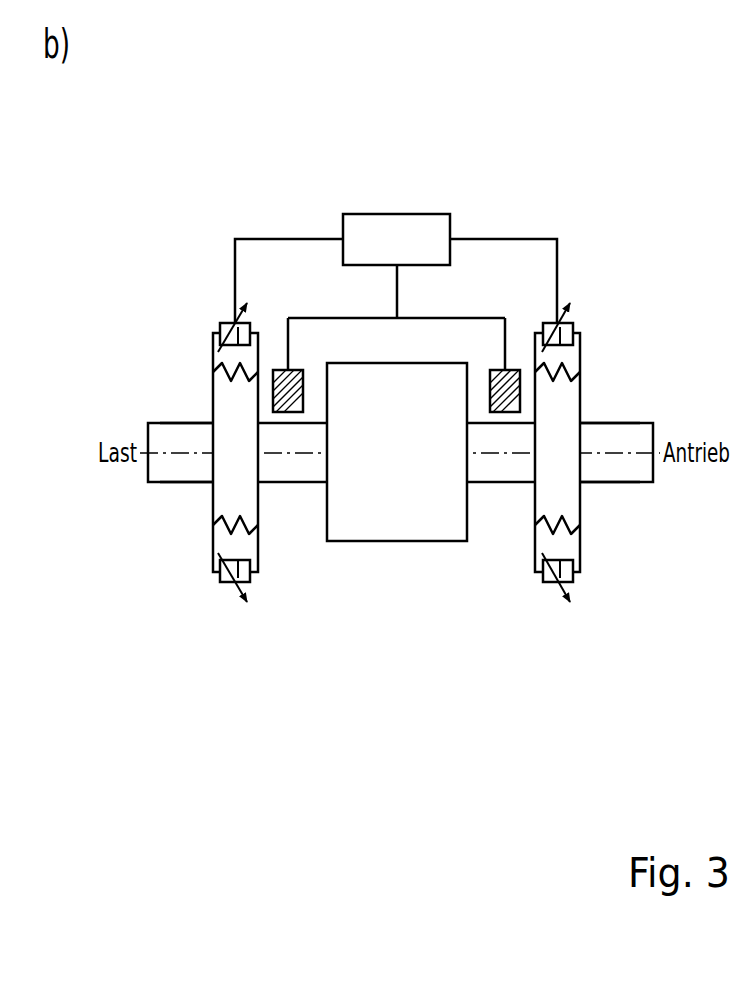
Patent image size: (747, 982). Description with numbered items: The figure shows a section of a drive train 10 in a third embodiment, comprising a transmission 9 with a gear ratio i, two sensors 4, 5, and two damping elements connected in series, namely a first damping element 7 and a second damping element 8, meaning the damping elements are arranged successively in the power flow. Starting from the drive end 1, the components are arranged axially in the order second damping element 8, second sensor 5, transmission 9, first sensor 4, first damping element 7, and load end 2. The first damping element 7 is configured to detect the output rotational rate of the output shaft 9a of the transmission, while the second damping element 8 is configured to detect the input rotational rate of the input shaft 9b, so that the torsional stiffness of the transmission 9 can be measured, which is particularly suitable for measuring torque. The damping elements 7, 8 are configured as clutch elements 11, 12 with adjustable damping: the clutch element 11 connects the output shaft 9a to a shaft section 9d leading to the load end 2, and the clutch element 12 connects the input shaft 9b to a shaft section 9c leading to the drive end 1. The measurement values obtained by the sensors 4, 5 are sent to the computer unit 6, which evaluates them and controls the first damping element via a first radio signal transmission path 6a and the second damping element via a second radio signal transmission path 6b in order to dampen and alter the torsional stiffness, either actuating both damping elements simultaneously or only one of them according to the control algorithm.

The drive end 1 is at (618, 465).
The load end 2 is at (168, 462).
The first sensor 4 is at (291, 392).
The second sensor 5 is at (503, 387).
The computer unit 6 is at (417, 238).
The first radio signal transmission path 6a is at (272, 239).
The second radio signal transmission path 6b is at (559, 277).
The first damping element 7 is at (200, 342).
The clutch element 11 is at (231, 421).
The second damping element 8 is at (615, 342).
The clutch element 12 is at (563, 415).
The transmission 9 is at (401, 508).
The output shaft 9a is at (292, 482).
The input shaft 9b is at (500, 482).
The shaft section 9c is at (602, 482).
The shaft section 9d is at (192, 482).
The drive train 10 is at (143, 207).